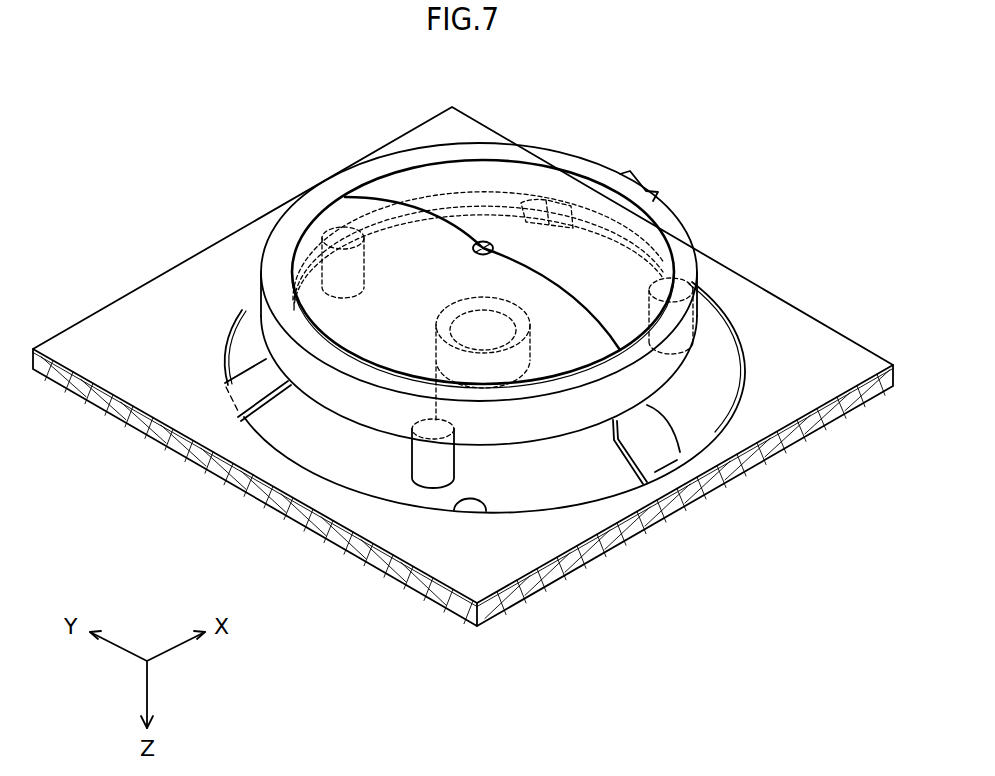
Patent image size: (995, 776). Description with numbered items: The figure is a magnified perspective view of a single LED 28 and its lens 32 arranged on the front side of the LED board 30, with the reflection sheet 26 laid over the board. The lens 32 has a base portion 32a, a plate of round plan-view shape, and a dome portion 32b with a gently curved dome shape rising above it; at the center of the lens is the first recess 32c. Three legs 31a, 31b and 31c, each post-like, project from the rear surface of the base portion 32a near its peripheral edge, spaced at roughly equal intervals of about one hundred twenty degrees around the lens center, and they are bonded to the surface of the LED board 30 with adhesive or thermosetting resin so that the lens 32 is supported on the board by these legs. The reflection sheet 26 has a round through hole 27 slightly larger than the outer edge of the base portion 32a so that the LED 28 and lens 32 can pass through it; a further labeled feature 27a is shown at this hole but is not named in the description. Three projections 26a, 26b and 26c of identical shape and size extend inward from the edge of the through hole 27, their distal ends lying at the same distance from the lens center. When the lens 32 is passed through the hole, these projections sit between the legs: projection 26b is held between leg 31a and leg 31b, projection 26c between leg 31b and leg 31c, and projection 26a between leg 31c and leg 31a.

The reflection sheet 26 is at (790, 344).
The projection 26a is at (258, 385).
The projection 26b is at (541, 212).
The projection 26c is at (642, 445).
The through hole 27 is at (338, 457).
The recess 27a is at (482, 513).
The LED 28 is at (530, 360).
The LED board 30 is at (813, 430).
The leg 31a is at (343, 299).
The leg 31b is at (675, 322).
The leg 31c is at (428, 460).
The lens 32 is at (490, 252).
The base portion 32a is at (677, 226).
The dome portion 32b is at (578, 245).
The first recess 32c is at (483, 241).